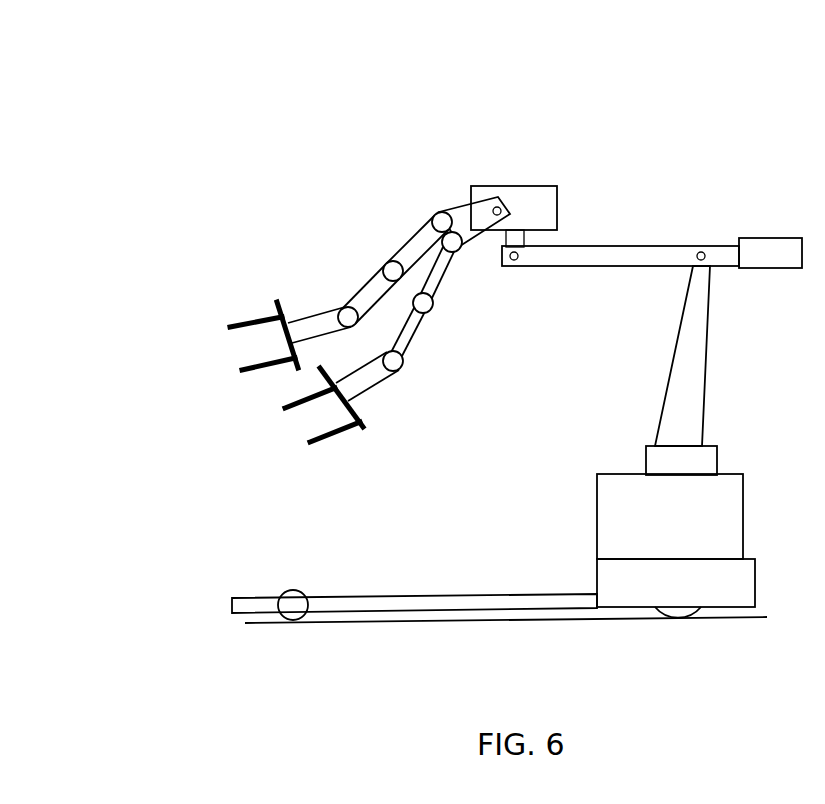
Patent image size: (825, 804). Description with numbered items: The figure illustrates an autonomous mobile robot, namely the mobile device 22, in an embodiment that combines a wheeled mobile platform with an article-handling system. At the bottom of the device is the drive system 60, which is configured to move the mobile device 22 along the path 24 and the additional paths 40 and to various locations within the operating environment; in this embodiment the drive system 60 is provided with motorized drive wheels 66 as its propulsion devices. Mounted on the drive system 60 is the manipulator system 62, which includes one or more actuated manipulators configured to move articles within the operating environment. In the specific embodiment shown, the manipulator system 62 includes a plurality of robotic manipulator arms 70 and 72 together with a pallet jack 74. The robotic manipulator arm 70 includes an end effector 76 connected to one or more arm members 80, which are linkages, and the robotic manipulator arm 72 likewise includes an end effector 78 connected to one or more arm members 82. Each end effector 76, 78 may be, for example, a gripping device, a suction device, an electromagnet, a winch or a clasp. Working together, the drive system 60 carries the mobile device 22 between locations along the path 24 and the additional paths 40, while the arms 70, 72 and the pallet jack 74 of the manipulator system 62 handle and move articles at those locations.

The mobile device 22 is at (315, 150).
The manipulator system 62 is at (426, 200).
The arm member 82 is at (410, 240).
The arm member 80 is at (420, 330).
The robotic manipulator arm 72 is at (318, 314).
The robotic manipulator arm 70 is at (386, 384).
The end effector 78 is at (260, 319).
The end effector 76 is at (335, 431).
The pallet jack 74 is at (400, 597).
The path 24 is at (475, 651).
The additional path 40 is at (258, 626).
The motorized drive wheel 66 is at (700, 612).
The drive system 60 is at (675, 630).